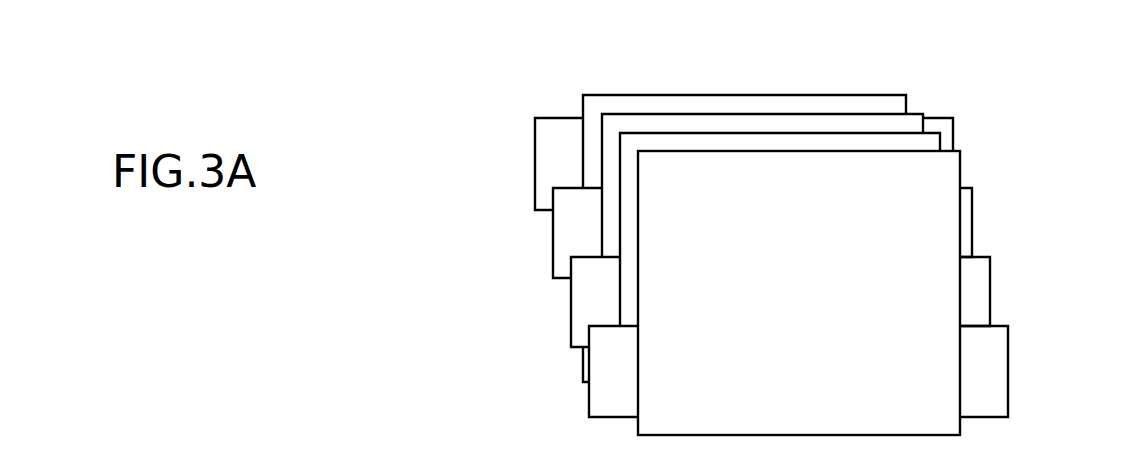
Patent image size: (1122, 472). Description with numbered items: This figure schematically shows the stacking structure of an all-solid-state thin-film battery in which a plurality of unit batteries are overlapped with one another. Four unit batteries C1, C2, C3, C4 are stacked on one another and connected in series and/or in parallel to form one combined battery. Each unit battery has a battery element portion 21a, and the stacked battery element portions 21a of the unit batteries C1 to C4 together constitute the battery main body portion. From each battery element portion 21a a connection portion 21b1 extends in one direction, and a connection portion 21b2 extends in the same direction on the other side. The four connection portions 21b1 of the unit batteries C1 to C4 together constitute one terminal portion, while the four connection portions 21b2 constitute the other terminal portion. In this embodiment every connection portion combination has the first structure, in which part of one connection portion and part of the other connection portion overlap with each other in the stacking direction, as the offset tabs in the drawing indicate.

The unit battery C1 is at (625, 105).
The unit battery C2 is at (665, 122).
The unit battery C3 is at (704, 138).
The unit battery C4 is at (740, 158).
The battery element portion 21a is at (773, 110).
The connection portion 21b1 is at (548, 153).
The connection portion 21b2 is at (950, 132).